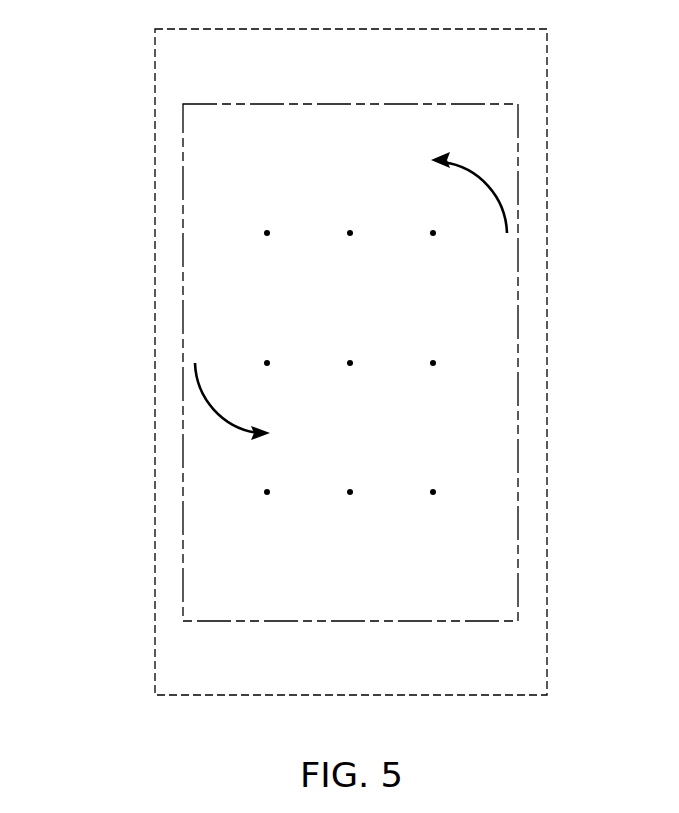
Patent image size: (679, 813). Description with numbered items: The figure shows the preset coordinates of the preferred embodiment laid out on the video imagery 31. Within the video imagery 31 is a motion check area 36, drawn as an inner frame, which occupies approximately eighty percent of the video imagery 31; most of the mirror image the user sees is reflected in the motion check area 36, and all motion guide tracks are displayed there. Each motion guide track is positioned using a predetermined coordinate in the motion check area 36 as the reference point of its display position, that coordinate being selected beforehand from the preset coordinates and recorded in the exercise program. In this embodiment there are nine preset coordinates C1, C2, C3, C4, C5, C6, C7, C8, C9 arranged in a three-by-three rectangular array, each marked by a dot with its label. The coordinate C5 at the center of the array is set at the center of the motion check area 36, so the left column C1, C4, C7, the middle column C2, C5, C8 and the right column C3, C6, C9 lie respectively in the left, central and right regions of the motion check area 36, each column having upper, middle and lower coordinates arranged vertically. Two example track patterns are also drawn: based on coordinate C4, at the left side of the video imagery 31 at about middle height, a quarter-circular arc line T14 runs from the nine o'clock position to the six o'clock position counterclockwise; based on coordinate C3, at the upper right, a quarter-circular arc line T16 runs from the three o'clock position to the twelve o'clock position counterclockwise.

The video imagery 31 is at (150, 225).
The motion check area 36 is at (518, 367).
The quarter-circular arc line T14 is at (207, 411).
The quarter-circular arc line T16 is at (500, 185).
The preset coordinate C1 is at (266, 253).
The preset coordinate C2 is at (350, 253).
The preset coordinate C3 is at (433, 253).
The preset coordinate C4 is at (267, 384).
The preset coordinate C5 is at (350, 384).
The preset coordinate C6 is at (433, 384).
The preset coordinate C7 is at (267, 512).
The preset coordinate C8 is at (350, 512).
The preset coordinate C9 is at (433, 512).